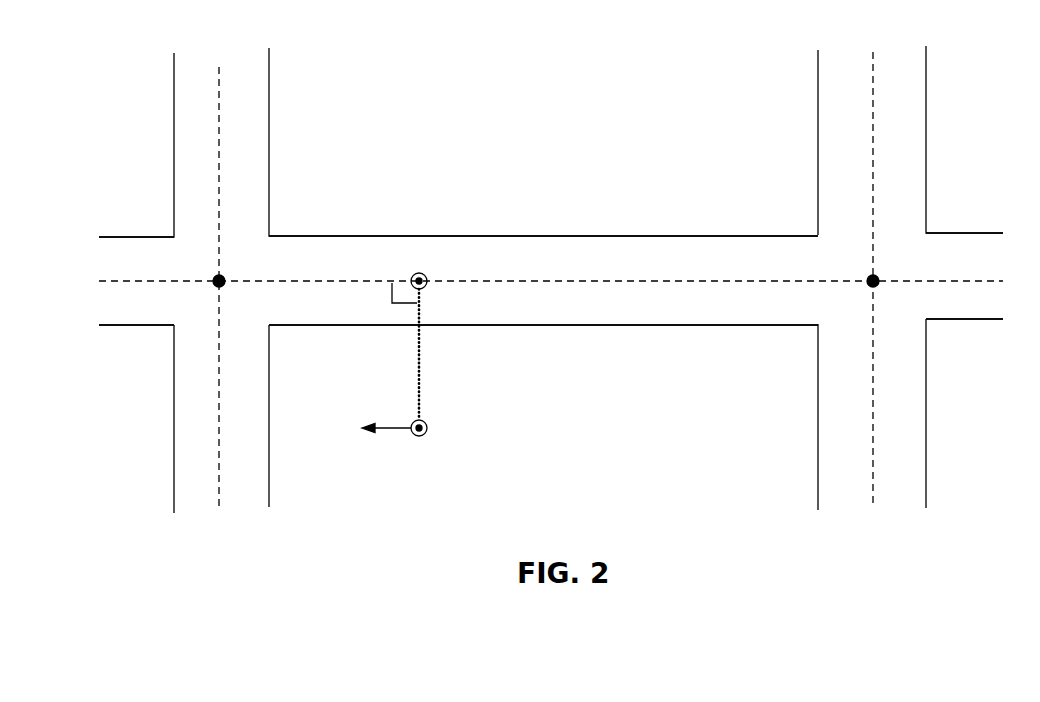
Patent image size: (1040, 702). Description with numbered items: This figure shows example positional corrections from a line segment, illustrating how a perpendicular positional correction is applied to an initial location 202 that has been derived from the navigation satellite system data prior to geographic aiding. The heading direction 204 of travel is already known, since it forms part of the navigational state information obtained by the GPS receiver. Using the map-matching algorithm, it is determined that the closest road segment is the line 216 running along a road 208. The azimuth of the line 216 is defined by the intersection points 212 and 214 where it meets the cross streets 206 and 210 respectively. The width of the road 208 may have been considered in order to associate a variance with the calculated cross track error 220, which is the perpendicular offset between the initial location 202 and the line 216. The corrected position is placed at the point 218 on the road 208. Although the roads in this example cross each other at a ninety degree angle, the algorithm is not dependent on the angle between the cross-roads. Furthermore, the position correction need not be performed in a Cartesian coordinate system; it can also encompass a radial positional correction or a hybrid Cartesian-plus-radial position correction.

The initial location 202 is at (427, 433).
The heading direction 204 is at (390, 429).
The cross street 206 is at (269, 88).
The road 208 is at (523, 236).
The cross street 210 is at (926, 87).
The intersection point 212 is at (221, 279).
The intersection point 214 is at (874, 279).
The line 216 is at (639, 277).
The corrected position point 218 is at (420, 279).
The cross track error 220 is at (420, 362).